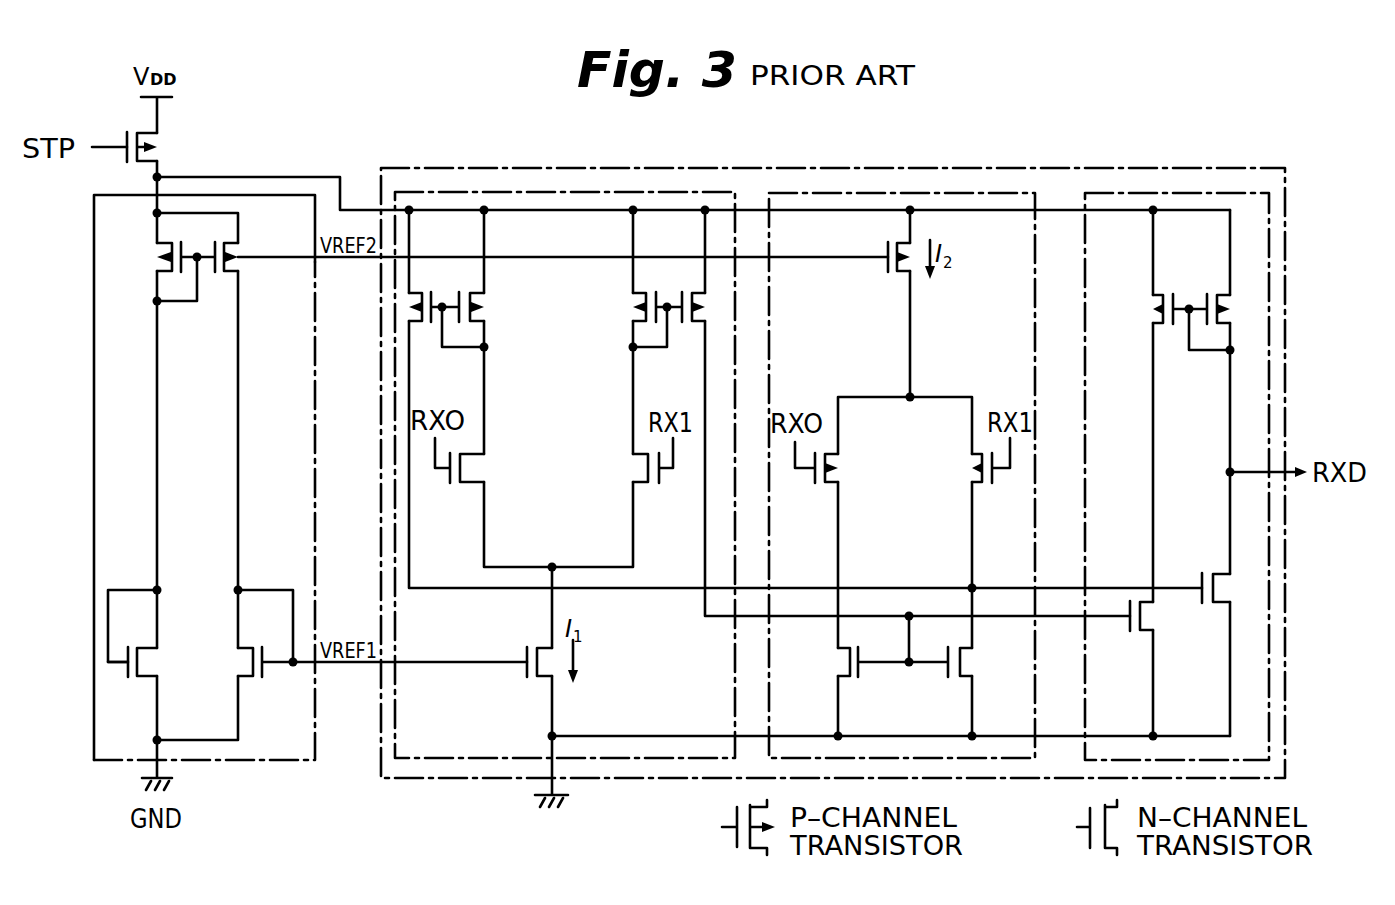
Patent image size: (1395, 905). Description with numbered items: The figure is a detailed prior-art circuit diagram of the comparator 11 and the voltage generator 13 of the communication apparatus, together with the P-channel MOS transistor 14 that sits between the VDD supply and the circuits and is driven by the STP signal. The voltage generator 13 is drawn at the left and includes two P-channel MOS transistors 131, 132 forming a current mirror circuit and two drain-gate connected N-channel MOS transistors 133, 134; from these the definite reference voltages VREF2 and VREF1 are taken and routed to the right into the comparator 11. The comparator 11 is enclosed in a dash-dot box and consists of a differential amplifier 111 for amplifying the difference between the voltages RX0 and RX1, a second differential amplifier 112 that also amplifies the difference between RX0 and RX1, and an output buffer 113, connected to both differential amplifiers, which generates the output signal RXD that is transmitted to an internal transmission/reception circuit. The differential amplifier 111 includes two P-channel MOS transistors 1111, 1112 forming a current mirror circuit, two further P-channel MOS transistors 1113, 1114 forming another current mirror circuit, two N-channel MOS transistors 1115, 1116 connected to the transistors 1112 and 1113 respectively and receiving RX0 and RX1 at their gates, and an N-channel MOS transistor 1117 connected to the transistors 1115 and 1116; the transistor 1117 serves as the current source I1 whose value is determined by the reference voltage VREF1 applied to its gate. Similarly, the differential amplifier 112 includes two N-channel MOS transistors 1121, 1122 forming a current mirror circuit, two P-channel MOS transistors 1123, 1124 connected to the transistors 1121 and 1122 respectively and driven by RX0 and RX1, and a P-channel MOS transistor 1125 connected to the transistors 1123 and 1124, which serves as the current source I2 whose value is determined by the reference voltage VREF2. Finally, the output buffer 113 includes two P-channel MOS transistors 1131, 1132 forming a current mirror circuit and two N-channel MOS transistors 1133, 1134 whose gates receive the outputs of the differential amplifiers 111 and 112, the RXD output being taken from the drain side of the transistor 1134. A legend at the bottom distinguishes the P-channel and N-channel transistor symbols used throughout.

The comparator 11 is at (983, 168).
The voltage generator 13 is at (257, 193).
The P-channel MOS transistor 14 is at (147, 140).
The differential amplifier 111 is at (570, 190).
The differential amplifier 112 is at (837, 190).
The output buffer 113 is at (1175, 192).
The P-channel MOS transistor 131 is at (162, 268).
The P-channel MOS transistor 132 is at (232, 270).
The N-channel MOS transistor 133 is at (147, 667).
The N-channel MOS transistor 134 is at (240, 658).
The P-channel MOS transistor 1111 is at (413, 322).
The P-channel MOS transistor 1112 is at (475, 305).
The P-channel MOS transistor 1113 is at (635, 310).
The P-channel MOS transistor 1114 is at (697, 320).
The N-channel MOS transistor 1115 is at (470, 468).
The N-channel MOS transistor 1116 is at (638, 472).
The N-channel MOS transistor 1117 is at (543, 675).
The N-channel MOS transistor 1121 is at (843, 667).
The N-channel MOS transistor 1122 is at (967, 663).
The P-channel MOS transistor 1123 is at (835, 460).
The P-channel MOS transistor 1124 is at (973, 478).
The P-channel MOS transistor 1125 is at (905, 280).
The P-channel MOS transistor 1131 is at (1155, 317).
The P-channel MOS transistor 1132 is at (1222, 298).
The N-channel MOS transistor 1133 is at (1152, 618).
The N-channel MOS transistor 1134 is at (1223, 587).